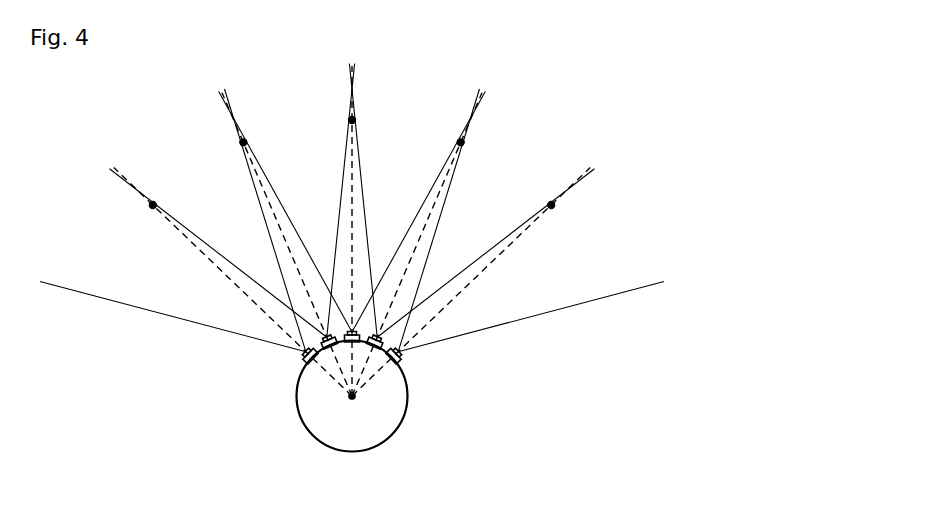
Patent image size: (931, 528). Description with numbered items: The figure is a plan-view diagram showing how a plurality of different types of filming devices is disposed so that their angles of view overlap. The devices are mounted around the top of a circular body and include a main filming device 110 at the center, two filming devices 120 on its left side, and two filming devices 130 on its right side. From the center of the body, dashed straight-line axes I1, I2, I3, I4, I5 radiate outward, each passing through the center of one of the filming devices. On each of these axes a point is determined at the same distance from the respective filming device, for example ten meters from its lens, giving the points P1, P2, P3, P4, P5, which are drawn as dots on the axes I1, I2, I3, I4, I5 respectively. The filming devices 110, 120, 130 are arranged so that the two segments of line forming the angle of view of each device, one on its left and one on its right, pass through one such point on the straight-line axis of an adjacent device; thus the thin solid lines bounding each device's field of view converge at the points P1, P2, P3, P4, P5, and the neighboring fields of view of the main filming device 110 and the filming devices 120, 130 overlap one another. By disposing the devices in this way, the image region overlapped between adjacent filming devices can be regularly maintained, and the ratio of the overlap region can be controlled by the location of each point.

The main filming device 110 is at (364, 338).
The filming devices on the left side 120 is at (324, 340).
The filming devices on the right side 130 is at (381, 339).
The point P1 is at (350, 121).
The point P2 is at (242, 143).
The point P3 is at (462, 143).
The point P4 is at (152, 206).
The point P5 is at (553, 206).
The straight-line axis I1 is at (350, 232).
The straight-line axis I2 is at (290, 240).
The straight-line axis I3 is at (418, 240).
The straight-line axis I4 is at (230, 287).
The straight-line axis I5 is at (476, 288).